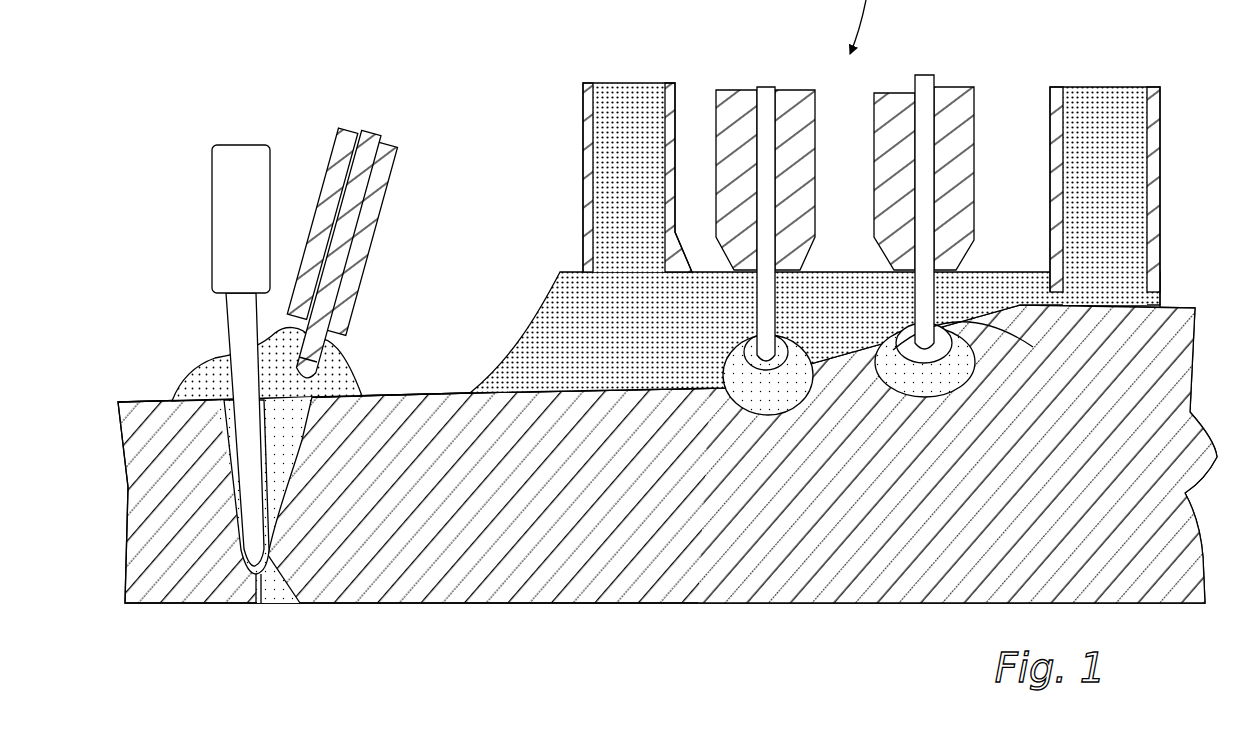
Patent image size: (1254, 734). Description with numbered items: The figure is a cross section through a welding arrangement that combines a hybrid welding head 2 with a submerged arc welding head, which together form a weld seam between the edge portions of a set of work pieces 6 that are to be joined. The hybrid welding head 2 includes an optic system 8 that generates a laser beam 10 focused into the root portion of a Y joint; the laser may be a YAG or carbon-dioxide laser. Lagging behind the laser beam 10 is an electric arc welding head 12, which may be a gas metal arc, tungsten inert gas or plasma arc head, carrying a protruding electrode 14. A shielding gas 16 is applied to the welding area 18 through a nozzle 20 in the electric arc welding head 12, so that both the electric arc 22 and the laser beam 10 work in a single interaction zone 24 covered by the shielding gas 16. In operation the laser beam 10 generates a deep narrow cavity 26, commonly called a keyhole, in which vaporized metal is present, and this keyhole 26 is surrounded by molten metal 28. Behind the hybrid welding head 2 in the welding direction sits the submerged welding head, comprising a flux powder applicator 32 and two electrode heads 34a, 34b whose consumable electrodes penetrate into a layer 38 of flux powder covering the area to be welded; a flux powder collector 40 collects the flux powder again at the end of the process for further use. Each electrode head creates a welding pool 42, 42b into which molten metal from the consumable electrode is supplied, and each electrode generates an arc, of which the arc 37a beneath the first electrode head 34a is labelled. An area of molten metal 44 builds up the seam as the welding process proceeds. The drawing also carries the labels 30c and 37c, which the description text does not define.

The hybrid welding head 2 is at (190, 242).
The work pieces 6 is at (155, 517).
The optic system 8 is at (232, 200).
The laser beam 10 is at (241, 330).
The electric arc welding head 12 is at (390, 253).
The protruding electrode 14 is at (333, 353).
The shielding gas 16 is at (330, 350).
The welding area 18 is at (272, 316).
The nozzle 20 is at (355, 237).
The electric arc 22 is at (347, 384).
The single interaction zone 24 is at (215, 447).
The keyhole 26 is at (248, 548).
The molten metal 28 is at (300, 605).
The substrate surface 30c is at (1027, 352).
The flux powder applicator 32 is at (630, 220).
The electrode head 34a is at (790, 97).
The electrode head 34b is at (955, 95).
The arc 37a is at (730, 412).
The melted region 37c is at (1000, 392).
The layer of flux powder 38 is at (562, 270).
The flux powder collector 40 is at (1105, 145).
The welding pool 42 is at (914, 400).
The welding pool 42b is at (1000, 403).
The area of molten metal 44 is at (815, 420).